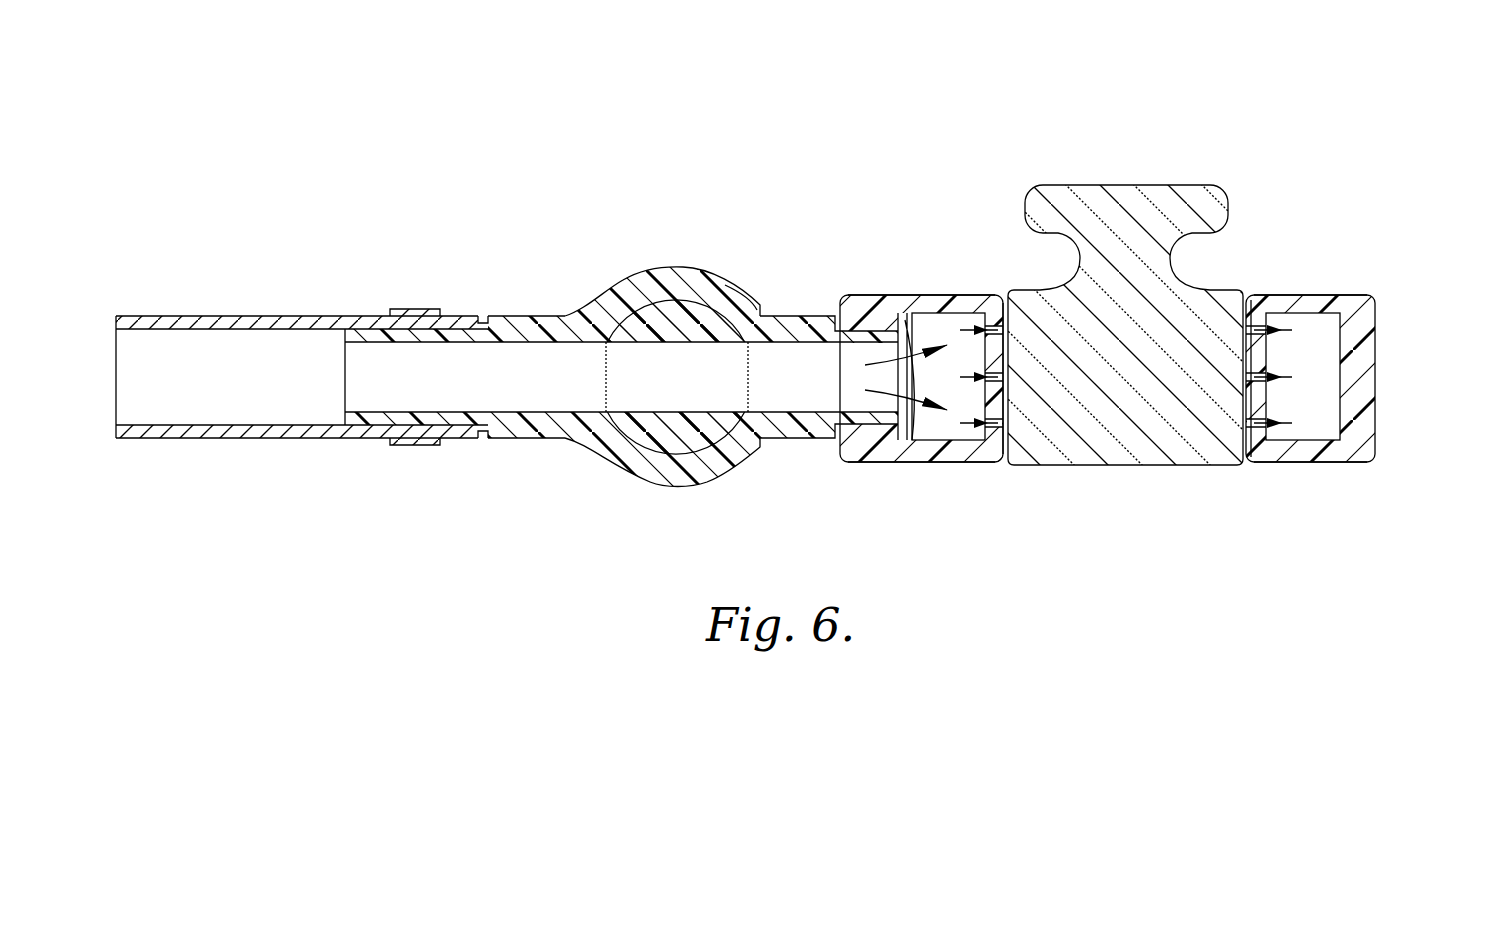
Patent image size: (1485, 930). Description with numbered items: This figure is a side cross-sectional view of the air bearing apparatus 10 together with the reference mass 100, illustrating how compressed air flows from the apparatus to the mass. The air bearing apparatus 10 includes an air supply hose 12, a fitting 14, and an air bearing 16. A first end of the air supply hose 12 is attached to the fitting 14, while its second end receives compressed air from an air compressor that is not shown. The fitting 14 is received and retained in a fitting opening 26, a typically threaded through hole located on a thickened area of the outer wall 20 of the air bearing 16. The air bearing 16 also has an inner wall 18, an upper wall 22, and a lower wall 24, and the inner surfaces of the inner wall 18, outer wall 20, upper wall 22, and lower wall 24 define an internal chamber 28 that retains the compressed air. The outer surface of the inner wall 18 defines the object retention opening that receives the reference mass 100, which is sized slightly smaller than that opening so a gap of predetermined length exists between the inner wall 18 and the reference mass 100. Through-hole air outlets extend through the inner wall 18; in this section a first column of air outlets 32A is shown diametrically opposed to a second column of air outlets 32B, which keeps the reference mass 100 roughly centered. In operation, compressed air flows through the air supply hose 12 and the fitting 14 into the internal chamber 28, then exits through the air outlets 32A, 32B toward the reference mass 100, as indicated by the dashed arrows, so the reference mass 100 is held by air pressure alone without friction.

The air bearing apparatus 10 is at (787, 137).
The air supply hose 12 is at (192, 307).
The fitting 14 is at (628, 265).
The air bearing 16 is at (977, 148).
The inner wall 18 is at (996, 398).
The outer wall 20 is at (1362, 407).
The upper wall 22 is at (973, 297).
The lower wall 24 is at (942, 452).
The fitting opening 26 is at (872, 318).
The internal chamber 28 is at (933, 318).
The first column of air outlets 32A is at (995, 433).
The second column of air outlets 32B is at (1257, 437).
The reference mass 100 is at (1138, 177).